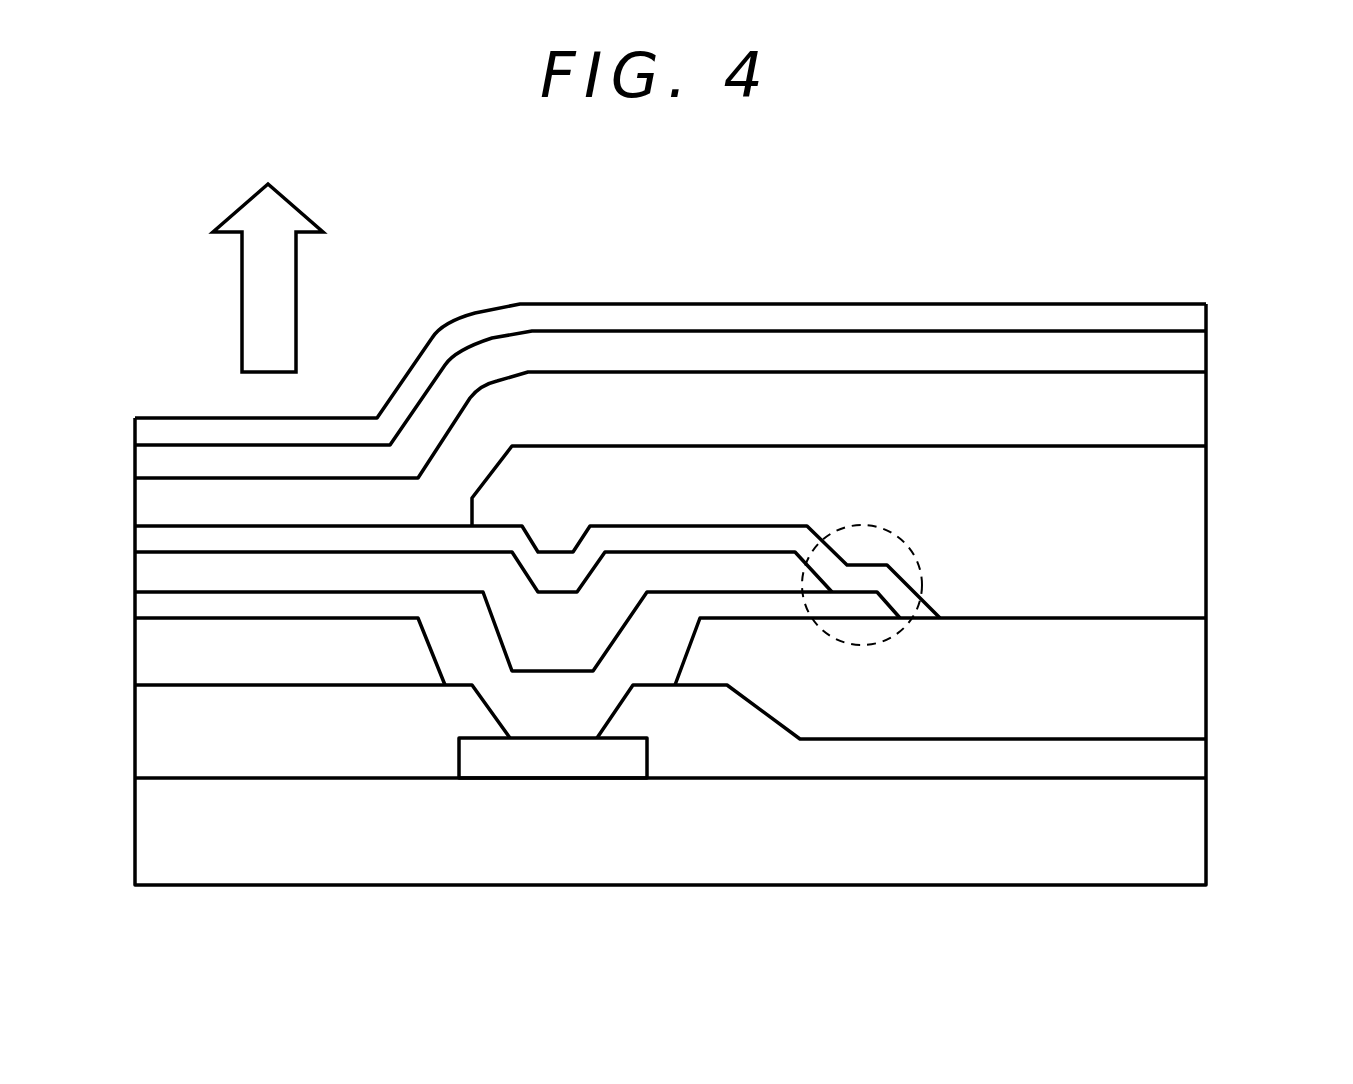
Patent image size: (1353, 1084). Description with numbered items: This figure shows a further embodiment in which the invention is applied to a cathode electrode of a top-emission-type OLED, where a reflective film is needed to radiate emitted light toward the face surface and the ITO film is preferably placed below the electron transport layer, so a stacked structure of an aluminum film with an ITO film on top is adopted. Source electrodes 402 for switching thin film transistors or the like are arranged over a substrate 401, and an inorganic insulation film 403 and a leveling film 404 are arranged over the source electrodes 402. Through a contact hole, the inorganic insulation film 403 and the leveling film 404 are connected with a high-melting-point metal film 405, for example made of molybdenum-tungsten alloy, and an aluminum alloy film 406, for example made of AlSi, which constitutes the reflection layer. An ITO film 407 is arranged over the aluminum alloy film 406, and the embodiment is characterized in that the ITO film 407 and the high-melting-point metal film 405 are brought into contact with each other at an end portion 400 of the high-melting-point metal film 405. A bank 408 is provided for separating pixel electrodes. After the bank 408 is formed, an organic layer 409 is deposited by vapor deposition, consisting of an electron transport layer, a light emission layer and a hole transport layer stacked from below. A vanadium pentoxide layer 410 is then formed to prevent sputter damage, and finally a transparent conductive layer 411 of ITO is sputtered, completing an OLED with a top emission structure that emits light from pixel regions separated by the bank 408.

The end portion 400 is at (908, 550).
The substrate 401 is at (917, 863).
The source electrodes 402 is at (518, 770).
The inorganic insulation film 403 is at (170, 737).
The leveling film 404 is at (147, 648).
The high-melting-point metal film 405 is at (153, 604).
The aluminum alloy film 406 is at (162, 574).
The ITO film 407 is at (150, 542).
The bank 408 is at (1180, 505).
The organic layer 409 is at (1180, 403).
The vanadium pentoxide layer 410 is at (1185, 348).
The transparent conductive layer 411 is at (1185, 315).